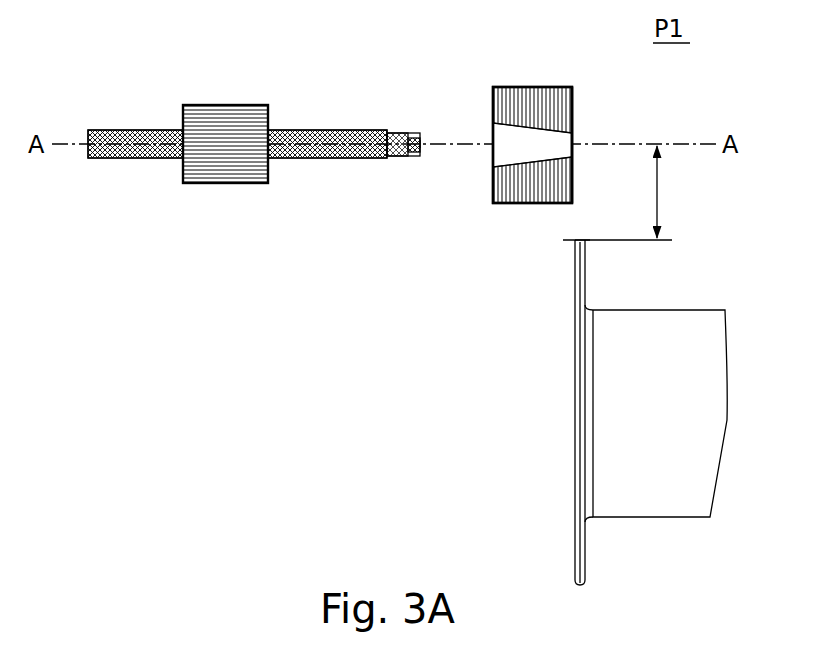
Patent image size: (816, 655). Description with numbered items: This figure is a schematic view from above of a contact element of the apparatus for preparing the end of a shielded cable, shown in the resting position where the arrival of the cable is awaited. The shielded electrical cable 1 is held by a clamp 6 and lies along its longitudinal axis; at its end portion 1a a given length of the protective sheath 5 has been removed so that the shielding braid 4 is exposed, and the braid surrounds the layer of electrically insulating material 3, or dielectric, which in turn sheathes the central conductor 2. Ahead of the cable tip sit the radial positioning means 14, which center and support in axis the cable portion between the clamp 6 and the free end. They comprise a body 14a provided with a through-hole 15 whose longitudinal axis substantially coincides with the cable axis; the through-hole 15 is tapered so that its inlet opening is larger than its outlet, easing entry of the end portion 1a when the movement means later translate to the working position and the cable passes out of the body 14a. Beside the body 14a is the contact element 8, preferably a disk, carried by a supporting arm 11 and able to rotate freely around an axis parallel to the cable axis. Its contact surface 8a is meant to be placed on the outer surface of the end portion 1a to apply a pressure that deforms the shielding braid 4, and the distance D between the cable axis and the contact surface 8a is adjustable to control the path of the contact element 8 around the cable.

The shielded electrical cable 1 is at (313, 130).
The end portion 1a is at (403, 130).
The central conductor 2 is at (421, 142).
The layer of electrically insulating material 3 is at (414, 153).
The shielding braid 4 is at (398, 156).
The protective sheath 5 is at (337, 156).
The clamp 6 is at (225, 188).
The contact element 8 is at (573, 425).
The contact surface 8a is at (576, 240).
The supporting arm 11 is at (657, 505).
The radial positioning means 14 is at (487, 214).
The body 14a is at (558, 90).
The through-hole 15 is at (521, 137).
The distance D is at (658, 188).